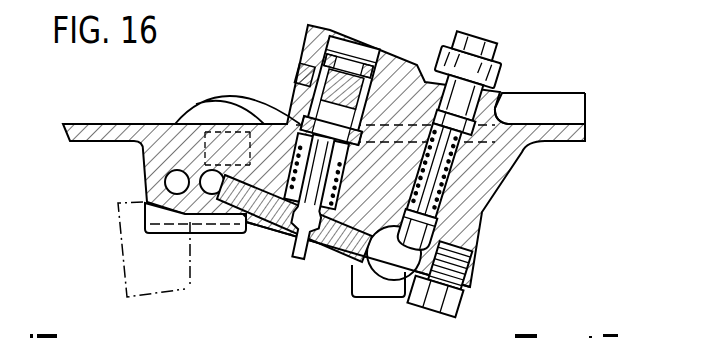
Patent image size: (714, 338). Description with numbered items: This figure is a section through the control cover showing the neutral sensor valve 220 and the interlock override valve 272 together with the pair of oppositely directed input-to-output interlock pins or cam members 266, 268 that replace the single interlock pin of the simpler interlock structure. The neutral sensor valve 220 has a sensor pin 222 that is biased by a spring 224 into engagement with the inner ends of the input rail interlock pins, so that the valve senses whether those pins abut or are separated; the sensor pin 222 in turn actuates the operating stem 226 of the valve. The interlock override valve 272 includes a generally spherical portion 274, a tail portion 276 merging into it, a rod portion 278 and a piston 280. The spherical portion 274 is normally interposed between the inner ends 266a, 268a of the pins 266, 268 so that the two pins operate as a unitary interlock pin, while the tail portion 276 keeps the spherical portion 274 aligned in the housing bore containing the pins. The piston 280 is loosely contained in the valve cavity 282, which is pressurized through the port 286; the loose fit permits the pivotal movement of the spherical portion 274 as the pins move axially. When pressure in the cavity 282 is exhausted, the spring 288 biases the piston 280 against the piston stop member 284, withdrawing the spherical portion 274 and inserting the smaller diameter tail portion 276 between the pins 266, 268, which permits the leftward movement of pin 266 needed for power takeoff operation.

The neutral sensor valve 220 is at (486, 77).
The sensor pin 222 is at (433, 240).
The spring 224 is at (447, 192).
The operating stem 226 is at (500, 118).
The input-to-output interlock pin 266 is at (368, 282).
The inner end of pin 266 266a is at (325, 264).
The input-to-output interlock pin 268 is at (246, 234).
The inner end of pin 268 268a is at (256, 236).
The interlock override valve 272 is at (298, 152).
The spherical portion 274 is at (337, 225).
The tail portion 276 is at (296, 259).
The rod portion 278 is at (353, 164).
The piston 280 is at (360, 114).
The valve cavity 282 is at (398, 66).
The piston stop member 284 is at (352, 62).
The port 286 is at (300, 75).
The spring 288 is at (212, 98).